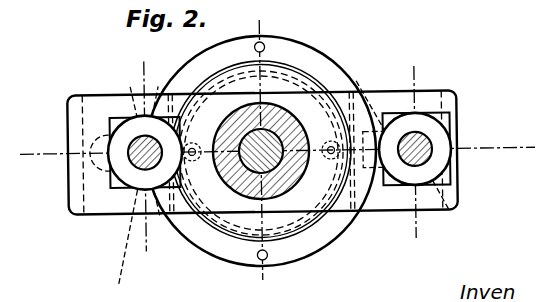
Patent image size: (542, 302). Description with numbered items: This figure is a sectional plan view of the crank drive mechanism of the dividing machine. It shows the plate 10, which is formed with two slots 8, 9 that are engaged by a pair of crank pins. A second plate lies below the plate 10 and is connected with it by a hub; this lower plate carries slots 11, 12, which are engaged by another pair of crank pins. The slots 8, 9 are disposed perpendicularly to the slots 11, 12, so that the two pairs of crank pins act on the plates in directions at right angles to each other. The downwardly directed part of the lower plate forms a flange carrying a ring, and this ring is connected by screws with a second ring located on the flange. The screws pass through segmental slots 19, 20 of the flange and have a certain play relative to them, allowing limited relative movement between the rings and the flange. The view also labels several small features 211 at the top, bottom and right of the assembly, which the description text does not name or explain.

The slot 8 is at (118, 115).
The slot 9 is at (390, 117).
The plate 10 is at (71, 102).
The slot 11 is at (108, 185).
The slot 12 is at (415, 151).
The segmental slot 19 is at (213, 197).
The segmental slot 20 is at (319, 100).
The holes 211 is at (268, 45).